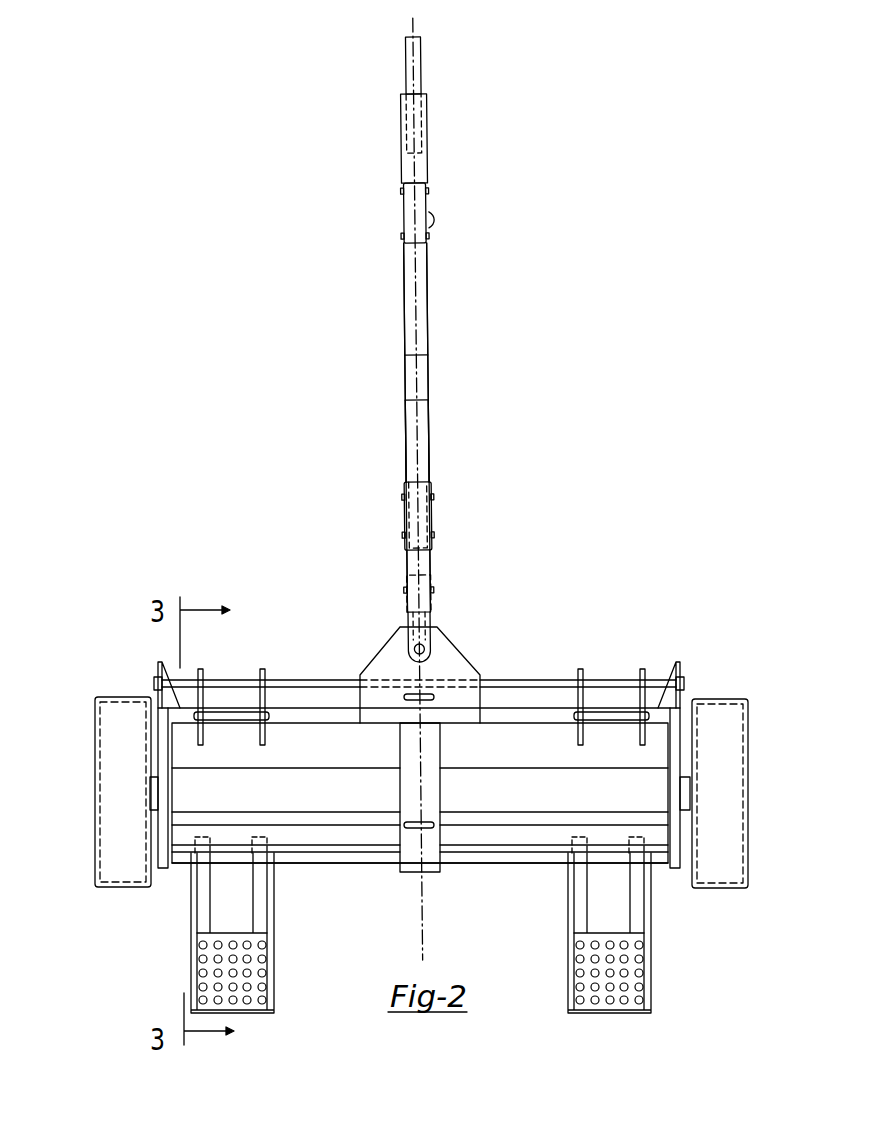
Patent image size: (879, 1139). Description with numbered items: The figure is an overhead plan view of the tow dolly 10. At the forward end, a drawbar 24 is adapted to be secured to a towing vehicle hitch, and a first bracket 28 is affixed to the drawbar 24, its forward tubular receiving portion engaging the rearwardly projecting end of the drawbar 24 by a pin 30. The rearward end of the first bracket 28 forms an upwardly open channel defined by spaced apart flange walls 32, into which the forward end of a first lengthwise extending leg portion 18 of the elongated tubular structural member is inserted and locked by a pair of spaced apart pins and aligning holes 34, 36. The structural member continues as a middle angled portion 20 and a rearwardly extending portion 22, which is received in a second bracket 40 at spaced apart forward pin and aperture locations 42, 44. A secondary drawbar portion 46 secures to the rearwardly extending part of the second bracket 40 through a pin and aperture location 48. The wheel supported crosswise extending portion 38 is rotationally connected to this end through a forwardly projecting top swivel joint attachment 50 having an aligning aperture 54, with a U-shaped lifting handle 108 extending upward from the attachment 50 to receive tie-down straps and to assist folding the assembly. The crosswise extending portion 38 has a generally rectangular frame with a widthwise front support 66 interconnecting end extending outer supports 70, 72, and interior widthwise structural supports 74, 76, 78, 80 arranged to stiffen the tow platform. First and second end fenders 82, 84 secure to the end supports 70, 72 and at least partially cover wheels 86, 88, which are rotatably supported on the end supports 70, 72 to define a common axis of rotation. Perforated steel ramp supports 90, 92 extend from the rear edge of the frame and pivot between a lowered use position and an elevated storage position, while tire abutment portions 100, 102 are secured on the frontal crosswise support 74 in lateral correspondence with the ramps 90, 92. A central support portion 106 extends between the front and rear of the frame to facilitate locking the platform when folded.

The tow dolly 10 is at (640, 267).
The first lengthwise extending leg portion 18 is at (407, 295).
The middle angled portion 20 is at (407, 380).
The rearwardly extending portion 22 is at (407, 440).
The drawbar 24 is at (406, 70).
The first bracket 28 is at (406, 160).
The pin 30 is at (406, 102).
The flange walls 32 is at (434, 226).
The pin and receiving hole 34 is at (431, 190).
The pin and receiving hole 36 is at (434, 236).
The crosswise extending portion 38 is at (78, 650).
The second bracket 40 is at (405, 561).
The forward location 42 is at (405, 533).
The forward location 44 is at (405, 496).
The secondary drawbar portion 46 is at (408, 620).
The pin/aperture location 48 is at (433, 590).
The top swivel joint attachment 50 is at (386, 667).
The aligning aperture 54 is at (424, 651).
The front support 66 is at (287, 680).
The end outer support 70 is at (160, 737).
The end outer support 72 is at (675, 738).
The widthwise structural support 74 is at (527, 717).
The widthwise structural support 76 is at (483, 768).
The widthwise structural support 78 is at (495, 850).
The widthwise structural support 80 is at (383, 858).
The first end fender 82 is at (95, 718).
The second end fender 84 is at (748, 735).
The wheel 86 is at (115, 817).
The wheel 88 is at (735, 828).
The ramp support 90 is at (191, 932).
The ramp support 92 is at (655, 930).
The tire abutment portion 100 is at (227, 717).
The tire abutment portion 102 is at (607, 712).
The central support portion 106 is at (402, 795).
The lifting handle 108 is at (428, 704).